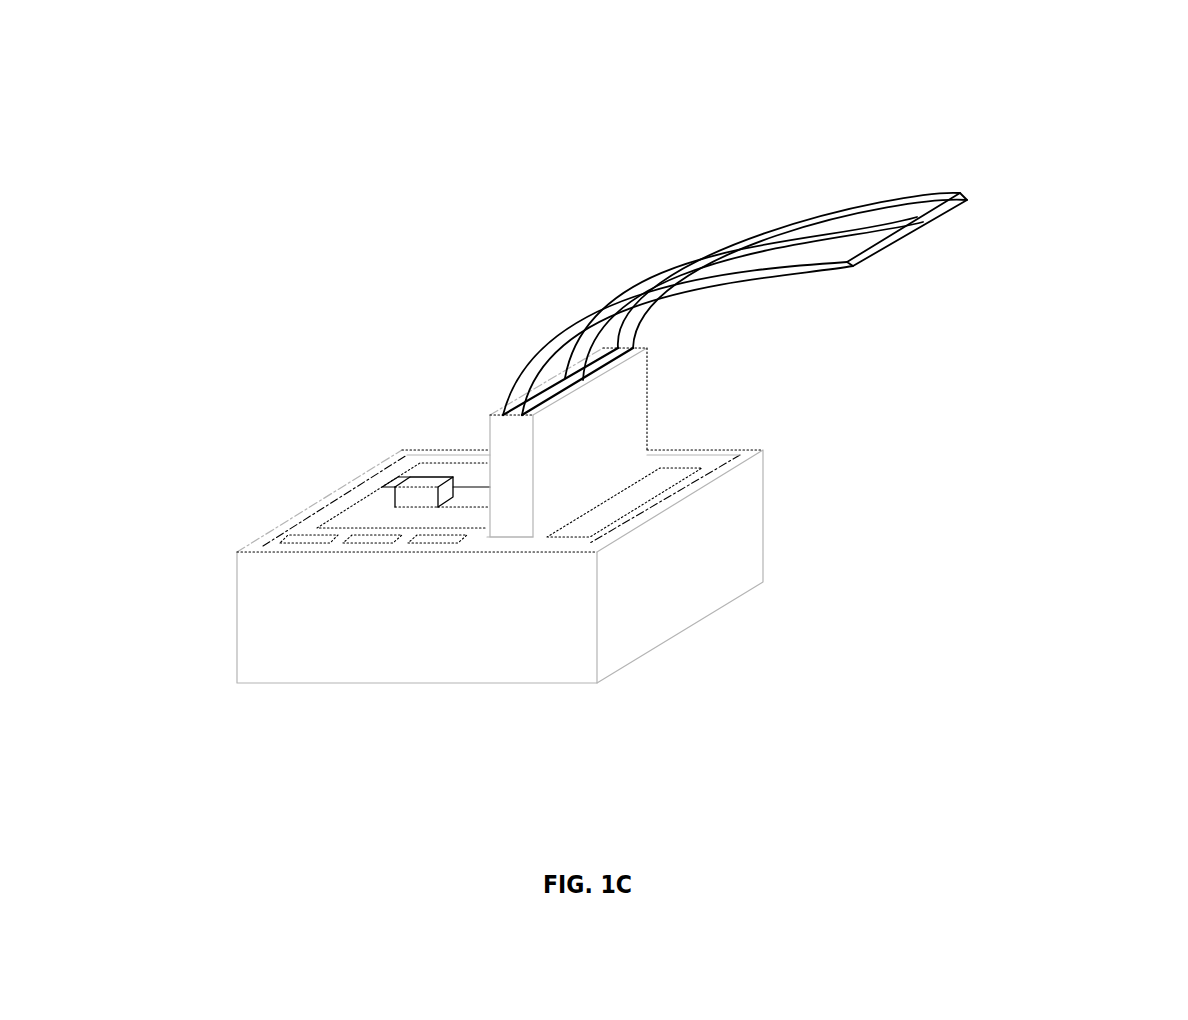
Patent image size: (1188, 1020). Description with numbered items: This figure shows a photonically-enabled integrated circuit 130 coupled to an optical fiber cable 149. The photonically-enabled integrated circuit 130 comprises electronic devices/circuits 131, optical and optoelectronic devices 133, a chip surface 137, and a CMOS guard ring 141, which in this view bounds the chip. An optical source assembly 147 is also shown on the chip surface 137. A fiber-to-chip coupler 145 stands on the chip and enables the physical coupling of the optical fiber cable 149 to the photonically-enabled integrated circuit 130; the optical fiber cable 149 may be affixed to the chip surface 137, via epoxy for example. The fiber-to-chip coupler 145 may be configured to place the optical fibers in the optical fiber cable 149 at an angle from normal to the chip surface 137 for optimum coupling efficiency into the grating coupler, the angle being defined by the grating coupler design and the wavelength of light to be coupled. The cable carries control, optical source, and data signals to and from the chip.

The photonically-enabled integrated circuit 130 is at (172, 139).
The electronic devices/circuits 131 is at (425, 544).
The optical and optoelectronic devices 133 is at (380, 525).
The chip surface 137 is at (365, 498).
The CMOS guard ring 141 is at (751, 450).
The fiber-to-chip coupler 145 is at (607, 453).
The optical source assembly 147 is at (420, 480).
The optical fiber cable 149 is at (797, 219).